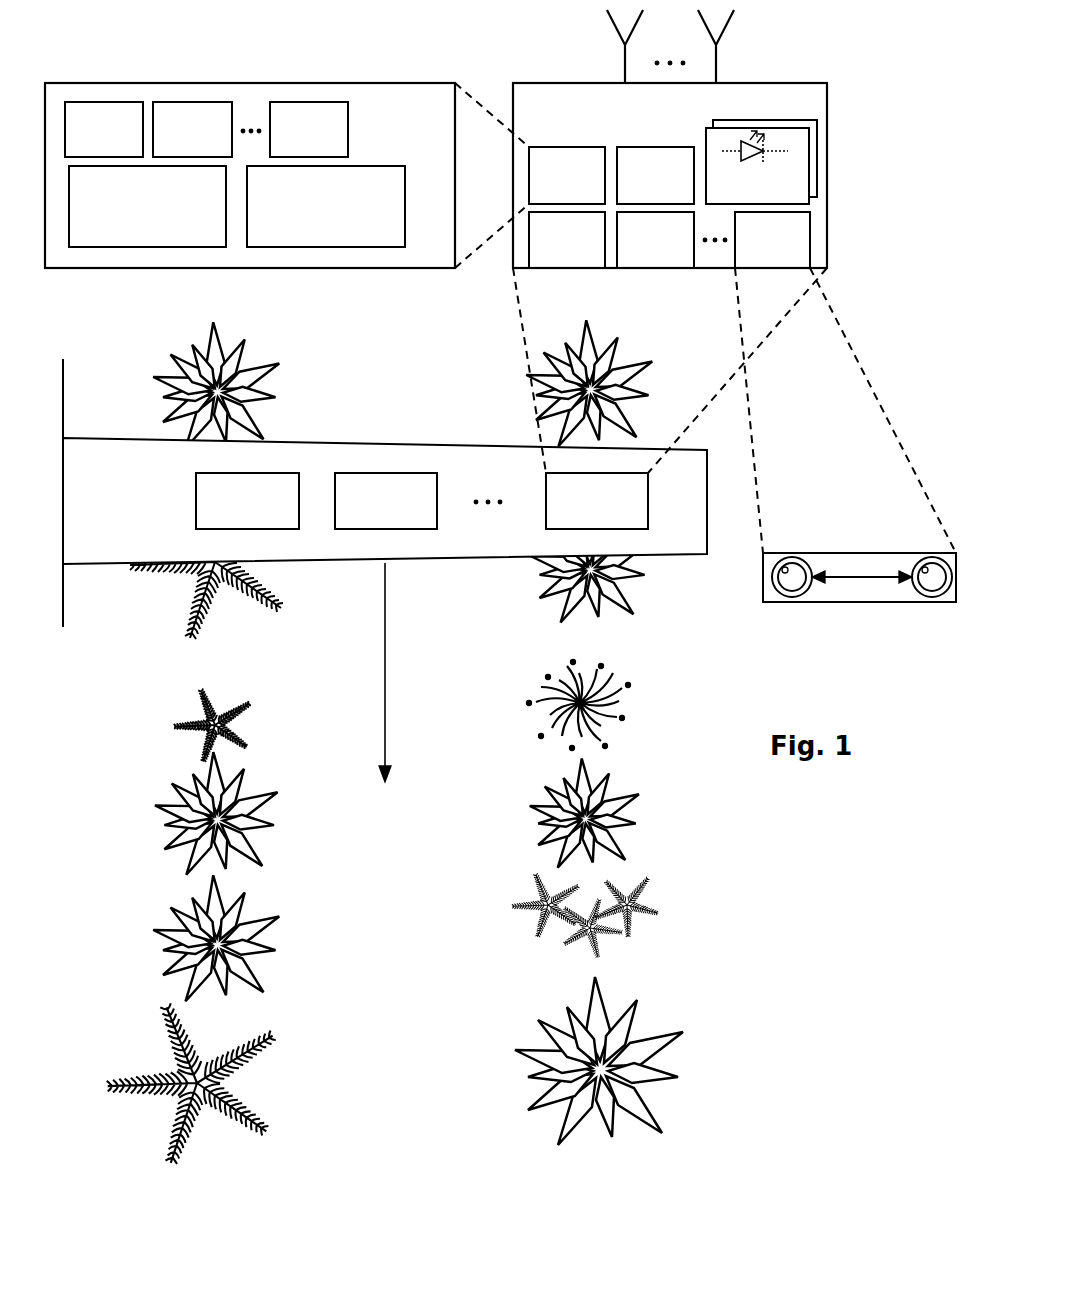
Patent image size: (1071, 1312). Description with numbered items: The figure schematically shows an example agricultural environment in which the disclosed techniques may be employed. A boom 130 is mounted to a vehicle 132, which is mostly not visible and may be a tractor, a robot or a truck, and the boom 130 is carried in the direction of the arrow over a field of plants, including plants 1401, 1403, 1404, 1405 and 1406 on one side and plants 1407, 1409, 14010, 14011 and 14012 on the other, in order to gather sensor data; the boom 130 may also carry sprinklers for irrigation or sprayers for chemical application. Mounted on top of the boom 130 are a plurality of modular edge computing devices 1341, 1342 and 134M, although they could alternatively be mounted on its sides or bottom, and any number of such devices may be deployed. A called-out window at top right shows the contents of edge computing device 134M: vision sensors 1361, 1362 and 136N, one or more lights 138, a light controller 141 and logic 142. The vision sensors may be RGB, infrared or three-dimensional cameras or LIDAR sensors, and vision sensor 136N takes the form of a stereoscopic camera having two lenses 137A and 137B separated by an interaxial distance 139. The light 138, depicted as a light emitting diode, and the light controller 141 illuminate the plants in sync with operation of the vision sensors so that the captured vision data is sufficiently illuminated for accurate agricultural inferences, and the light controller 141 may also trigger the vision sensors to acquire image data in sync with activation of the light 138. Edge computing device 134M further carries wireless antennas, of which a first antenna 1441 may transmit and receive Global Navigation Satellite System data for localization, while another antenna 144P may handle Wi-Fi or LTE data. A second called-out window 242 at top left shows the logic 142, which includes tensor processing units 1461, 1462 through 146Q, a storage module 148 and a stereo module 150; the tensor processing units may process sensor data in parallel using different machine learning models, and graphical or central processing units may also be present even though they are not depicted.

The controller 242 is at (403, 82).
The tensor processing unit 1461 is at (104, 129).
The tensor processing unit 1462 is at (192, 129).
The tensor processing unit 146Q is at (309, 129).
The storage module 148 is at (147, 206).
The stereo module 150 is at (326, 206).
The modular edge computing device 134M is at (540, 82).
The first antenna 1441 is at (623, 64).
The antenna 144P is at (750, 56).
The logic 142 is at (567, 175).
The light controller 141 is at (655, 175).
The light 138 is at (761, 162).
The vision sensor 1361 is at (567, 240).
The vision sensor 1362 is at (655, 240).
The vision sensor 136N is at (772, 240).
The boom 130 is at (394, 440).
The vehicle 132 is at (64, 404).
The modular edge computing device 1341 is at (247, 501).
The modular edge computing device 1342 is at (386, 501).
The lens 137A is at (800, 602).
The lens 137B is at (938, 602).
The interaxial distance 139 is at (849, 579).
The plant 1401 is at (145, 353).
The plant 1403 is at (151, 675).
The plant 1404 is at (151, 775).
The plant 1405 is at (111, 922).
The plant 1406 is at (111, 1048).
The plant 1407 is at (485, 379).
The plant 1409 is at (487, 704).
The plant 14010 is at (487, 806).
The plant 14011 is at (487, 902).
The plant 14012 is at (481, 1025).